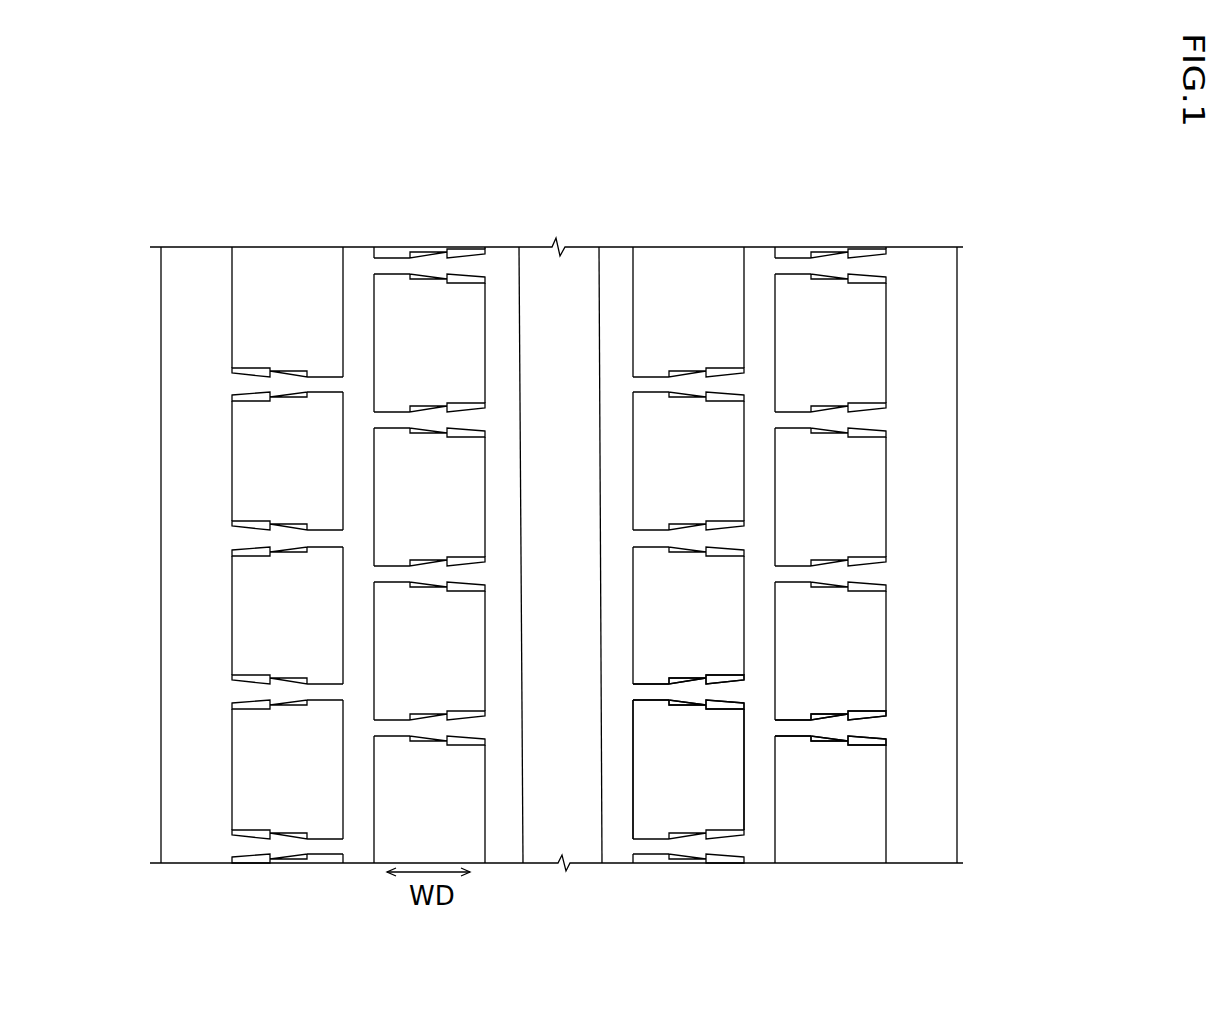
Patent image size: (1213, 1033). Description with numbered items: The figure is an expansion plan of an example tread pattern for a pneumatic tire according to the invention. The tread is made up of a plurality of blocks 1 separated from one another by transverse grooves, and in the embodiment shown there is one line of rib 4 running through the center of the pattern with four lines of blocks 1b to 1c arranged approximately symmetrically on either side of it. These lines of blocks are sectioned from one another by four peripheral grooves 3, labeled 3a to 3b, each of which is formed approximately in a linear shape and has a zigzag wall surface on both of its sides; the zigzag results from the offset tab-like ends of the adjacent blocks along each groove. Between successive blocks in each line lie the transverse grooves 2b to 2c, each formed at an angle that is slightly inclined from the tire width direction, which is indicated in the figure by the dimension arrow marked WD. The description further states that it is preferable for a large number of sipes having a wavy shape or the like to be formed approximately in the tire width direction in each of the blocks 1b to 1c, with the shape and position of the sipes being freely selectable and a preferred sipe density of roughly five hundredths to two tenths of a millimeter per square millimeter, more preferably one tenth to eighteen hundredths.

The block 1 is at (759, 517).
The block 1b is at (687, 259).
The block 1c is at (790, 278).
The transverse groove 2b is at (745, 690).
The transverse groove 2c is at (885, 727).
The peripheral groove 3 is at (690, 824).
The peripheral groove 3a is at (620, 850).
The peripheral groove 3b is at (739, 812).
The rib 4 is at (590, 277).